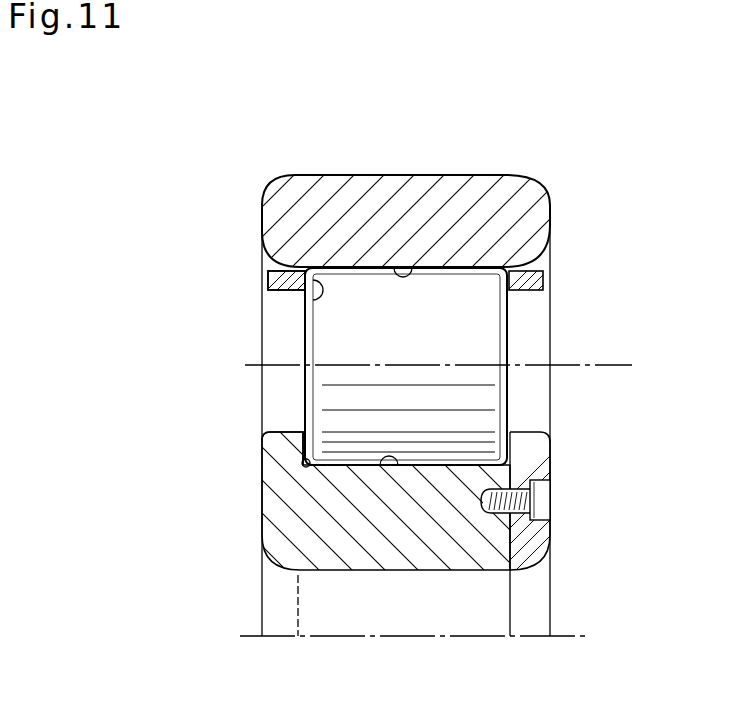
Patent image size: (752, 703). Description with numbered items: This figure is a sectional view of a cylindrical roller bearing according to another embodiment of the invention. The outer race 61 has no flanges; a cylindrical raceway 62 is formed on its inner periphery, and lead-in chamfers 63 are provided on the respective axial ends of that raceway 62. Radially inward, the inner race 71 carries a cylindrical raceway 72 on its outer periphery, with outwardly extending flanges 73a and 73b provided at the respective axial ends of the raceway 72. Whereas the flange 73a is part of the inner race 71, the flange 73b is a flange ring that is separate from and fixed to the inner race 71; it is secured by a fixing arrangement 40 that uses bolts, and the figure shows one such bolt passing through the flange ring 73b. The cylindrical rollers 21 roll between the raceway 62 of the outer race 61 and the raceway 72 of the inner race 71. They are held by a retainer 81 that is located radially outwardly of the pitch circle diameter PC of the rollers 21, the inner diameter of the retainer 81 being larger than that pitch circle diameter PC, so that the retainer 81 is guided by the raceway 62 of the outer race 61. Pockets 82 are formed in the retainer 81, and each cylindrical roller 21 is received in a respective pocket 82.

The outer race 61 is at (320, 192).
The cylindrical raceway 62 is at (405, 277).
The lead-in chamfers 63 is at (275, 266).
The retainer 81 is at (268, 287).
The pockets 82 is at (322, 290).
The cylindrical rollers 21 is at (325, 393).
The pitch circle diameter PC is at (597, 365).
The inner race 71 is at (278, 520).
The cylindrical raceway 72 is at (392, 472).
The flange 73a is at (285, 450).
The flange ring 73b is at (538, 448).
The fixing arrangement 40 is at (555, 497).